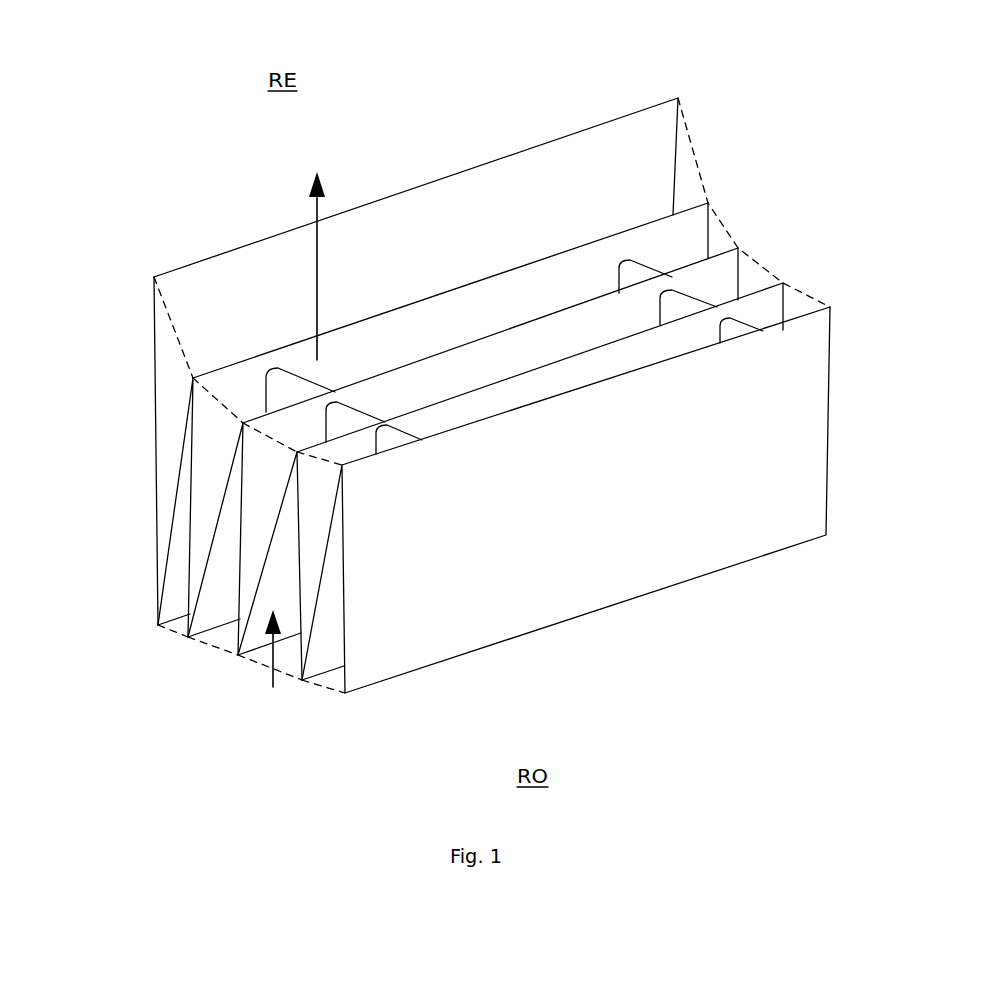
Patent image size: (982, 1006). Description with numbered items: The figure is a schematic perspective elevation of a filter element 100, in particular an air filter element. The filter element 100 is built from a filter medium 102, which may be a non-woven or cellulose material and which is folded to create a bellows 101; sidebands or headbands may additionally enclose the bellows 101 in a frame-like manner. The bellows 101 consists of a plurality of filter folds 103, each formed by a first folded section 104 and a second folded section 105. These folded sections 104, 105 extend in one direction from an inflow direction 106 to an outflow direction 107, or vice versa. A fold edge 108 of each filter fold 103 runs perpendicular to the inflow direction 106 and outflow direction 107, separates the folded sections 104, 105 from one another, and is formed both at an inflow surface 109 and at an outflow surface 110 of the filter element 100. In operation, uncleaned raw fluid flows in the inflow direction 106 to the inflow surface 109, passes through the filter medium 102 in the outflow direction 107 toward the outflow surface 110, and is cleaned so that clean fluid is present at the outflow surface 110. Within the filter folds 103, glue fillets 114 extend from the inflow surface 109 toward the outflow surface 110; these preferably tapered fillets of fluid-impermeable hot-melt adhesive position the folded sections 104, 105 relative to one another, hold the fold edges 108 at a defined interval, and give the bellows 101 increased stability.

The filter element 100 is at (226, 218).
The bellows 101 is at (473, 160).
The filter medium 102 is at (588, 582).
The filter fold 103 is at (662, 226).
The first folded section 104 is at (182, 468).
The second folded section 105 is at (190, 502).
The inflow direction 106 is at (273, 687).
The outflow direction 107 is at (320, 253).
The fold edge 108 is at (550, 250).
The inflow surface 109 is at (176, 642).
The outflow surface 110 is at (699, 168).
The glue fillet 114 is at (681, 310).